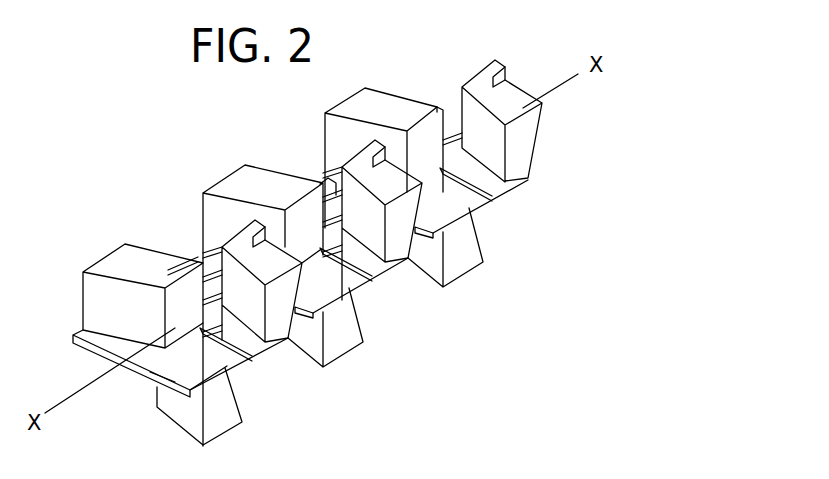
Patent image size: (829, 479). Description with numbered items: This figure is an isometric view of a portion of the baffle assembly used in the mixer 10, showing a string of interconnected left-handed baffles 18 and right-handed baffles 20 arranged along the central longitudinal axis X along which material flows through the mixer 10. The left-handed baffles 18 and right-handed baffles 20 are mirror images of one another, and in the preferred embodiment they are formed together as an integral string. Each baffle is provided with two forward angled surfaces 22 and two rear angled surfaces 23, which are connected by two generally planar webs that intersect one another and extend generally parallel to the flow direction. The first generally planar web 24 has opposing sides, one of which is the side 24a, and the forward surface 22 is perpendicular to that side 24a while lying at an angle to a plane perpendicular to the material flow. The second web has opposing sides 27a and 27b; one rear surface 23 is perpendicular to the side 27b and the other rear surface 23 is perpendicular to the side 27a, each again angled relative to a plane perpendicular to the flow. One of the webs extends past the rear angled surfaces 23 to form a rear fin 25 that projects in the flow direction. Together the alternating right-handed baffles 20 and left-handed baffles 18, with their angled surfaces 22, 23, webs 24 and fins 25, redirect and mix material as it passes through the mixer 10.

The mixer 10 is at (631, 100).
The left-handed baffle 18 is at (281, 355).
The right-handed baffle 20 is at (331, 98).
The forward angled surface 22 is at (97, 318).
The rear angled surface 23 is at (489, 242).
The first planar web 24 is at (100, 360).
The side of first web 24a is at (163, 363).
The rear fin 25 is at (508, 74).
The side of second web 27a is at (176, 287).
The side of second web 27b is at (185, 270).